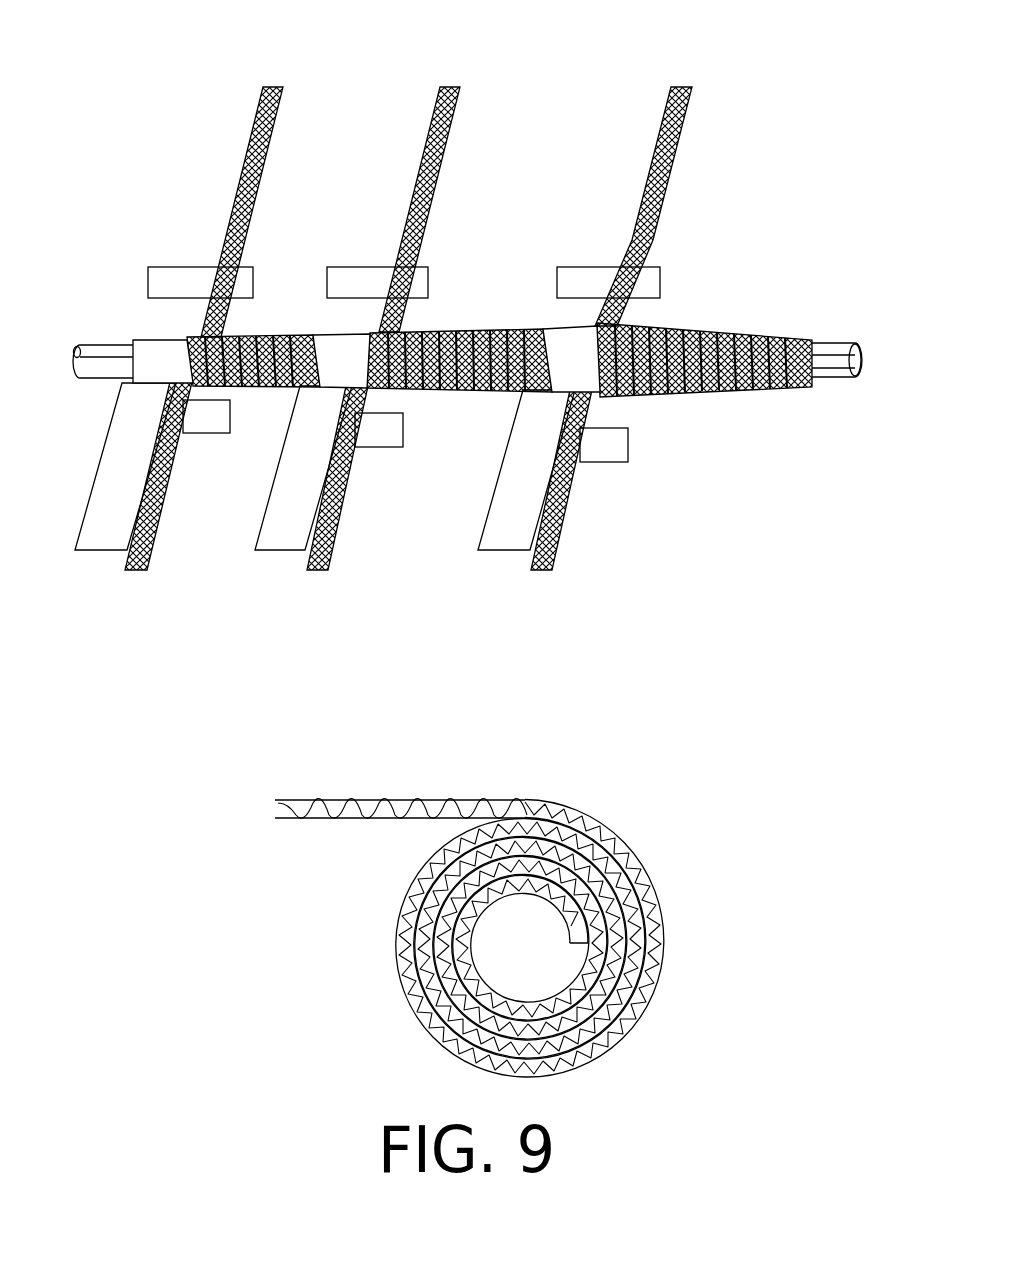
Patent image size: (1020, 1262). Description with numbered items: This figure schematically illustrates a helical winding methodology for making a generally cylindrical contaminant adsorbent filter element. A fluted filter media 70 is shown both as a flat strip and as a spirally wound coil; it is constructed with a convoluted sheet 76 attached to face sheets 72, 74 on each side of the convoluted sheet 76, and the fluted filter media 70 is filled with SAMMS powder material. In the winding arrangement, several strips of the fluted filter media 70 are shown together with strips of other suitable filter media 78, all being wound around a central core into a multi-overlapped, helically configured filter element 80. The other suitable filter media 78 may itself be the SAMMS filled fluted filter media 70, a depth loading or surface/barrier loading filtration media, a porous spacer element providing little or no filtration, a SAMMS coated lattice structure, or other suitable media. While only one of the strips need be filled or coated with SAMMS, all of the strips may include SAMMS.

The fluted filter media 70 is at (283, 108).
The face sheet 72 is at (303, 800).
The face sheet 74 is at (293, 818).
The convoluted sheet 76 is at (337, 818).
The other suitable filter media 78 is at (103, 553).
The helically configured filter element 80 is at (828, 170).